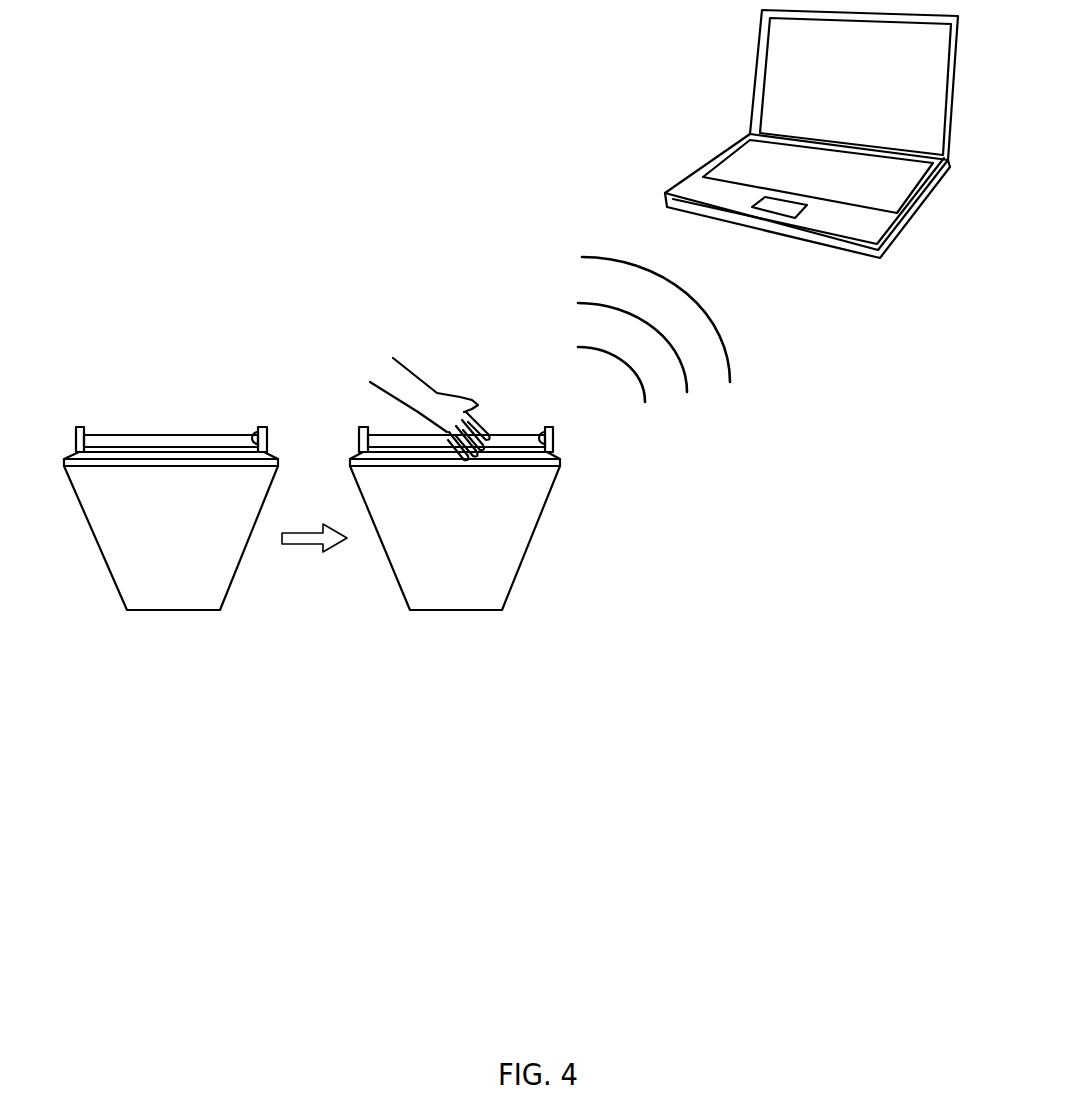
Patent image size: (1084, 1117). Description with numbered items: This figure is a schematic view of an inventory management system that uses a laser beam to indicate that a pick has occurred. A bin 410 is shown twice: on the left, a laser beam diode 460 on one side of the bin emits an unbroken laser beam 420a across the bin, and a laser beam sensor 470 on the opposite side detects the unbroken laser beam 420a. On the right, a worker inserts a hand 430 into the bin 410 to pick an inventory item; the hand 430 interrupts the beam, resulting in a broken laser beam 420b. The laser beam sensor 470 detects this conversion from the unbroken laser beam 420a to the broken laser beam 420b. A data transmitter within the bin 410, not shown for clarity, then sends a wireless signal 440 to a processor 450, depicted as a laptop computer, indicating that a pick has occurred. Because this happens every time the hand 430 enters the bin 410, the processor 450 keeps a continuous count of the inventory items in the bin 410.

The bin 410 is at (207, 547).
The unbroken laser beam 420a is at (138, 435).
The broken laser beam 420b is at (387, 433).
The hand 430 is at (443, 397).
The wireless signal 440 is at (728, 365).
The processor 450 is at (760, 31).
The laser beam diode 460 is at (77, 427).
The laser beam sensor 470 is at (258, 427).